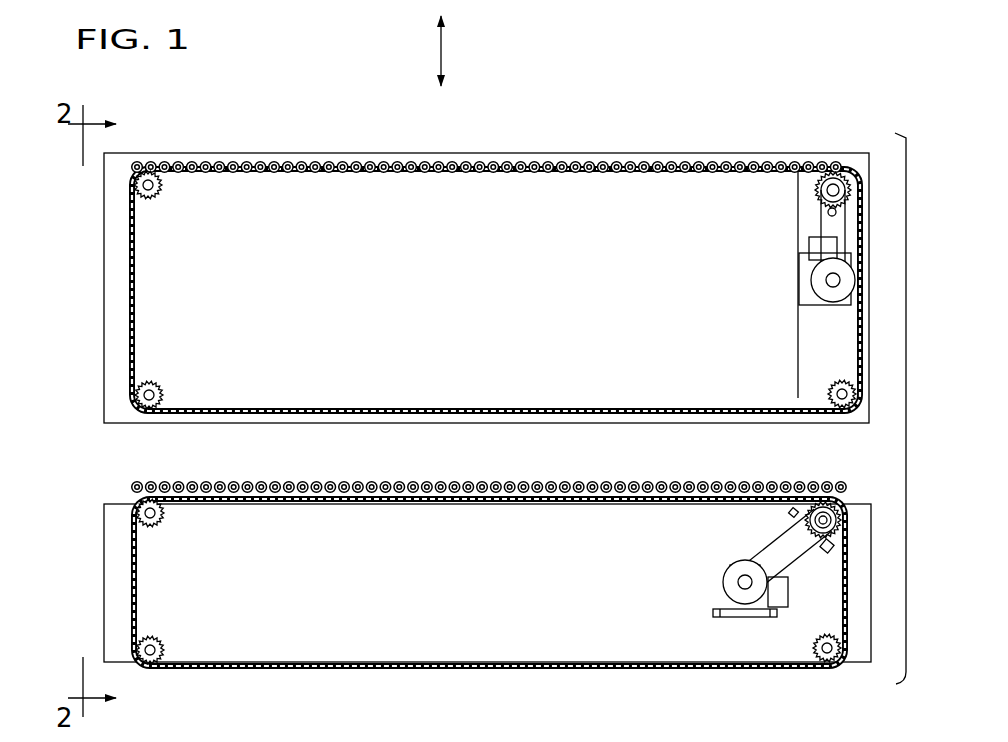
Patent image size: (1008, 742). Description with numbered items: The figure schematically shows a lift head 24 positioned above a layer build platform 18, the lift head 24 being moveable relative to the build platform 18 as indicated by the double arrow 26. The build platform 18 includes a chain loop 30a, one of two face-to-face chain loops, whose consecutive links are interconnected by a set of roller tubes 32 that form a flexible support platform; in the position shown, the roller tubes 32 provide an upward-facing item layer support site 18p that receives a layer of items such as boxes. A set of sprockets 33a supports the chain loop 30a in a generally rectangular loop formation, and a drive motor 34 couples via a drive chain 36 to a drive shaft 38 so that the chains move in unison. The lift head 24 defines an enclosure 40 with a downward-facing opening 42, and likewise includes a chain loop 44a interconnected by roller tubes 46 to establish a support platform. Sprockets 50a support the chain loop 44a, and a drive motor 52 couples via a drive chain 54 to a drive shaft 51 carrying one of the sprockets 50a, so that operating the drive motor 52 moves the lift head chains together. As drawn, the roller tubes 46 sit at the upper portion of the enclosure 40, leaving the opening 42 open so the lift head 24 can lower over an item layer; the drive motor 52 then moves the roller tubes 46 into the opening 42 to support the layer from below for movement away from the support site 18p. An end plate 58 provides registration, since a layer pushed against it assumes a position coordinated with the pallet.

The layer build platform 18 is at (858, 498).
The item layer support site 18p is at (556, 479).
The lift head 24 is at (305, 150).
The movement of lift head 26 is at (441, 48).
The chain loop 30a is at (134, 578).
The roller tubes 32 is at (441, 479).
The sprockets 33a is at (163, 524).
The drive motor 34 is at (726, 597).
The drive chain 36 is at (752, 565).
The drive shaft 38 is at (827, 549).
The enclosure 40 is at (380, 157).
The downward-facing opening 42 is at (312, 382).
The chain loop 44a is at (132, 285).
The roller tubes 46 is at (495, 181).
The sprockets 50a is at (162, 196).
The drive shaft 51 is at (818, 182).
The drive motor 52 is at (812, 302).
The drive chain 54 is at (820, 228).
The end plate 58 is at (798, 325).